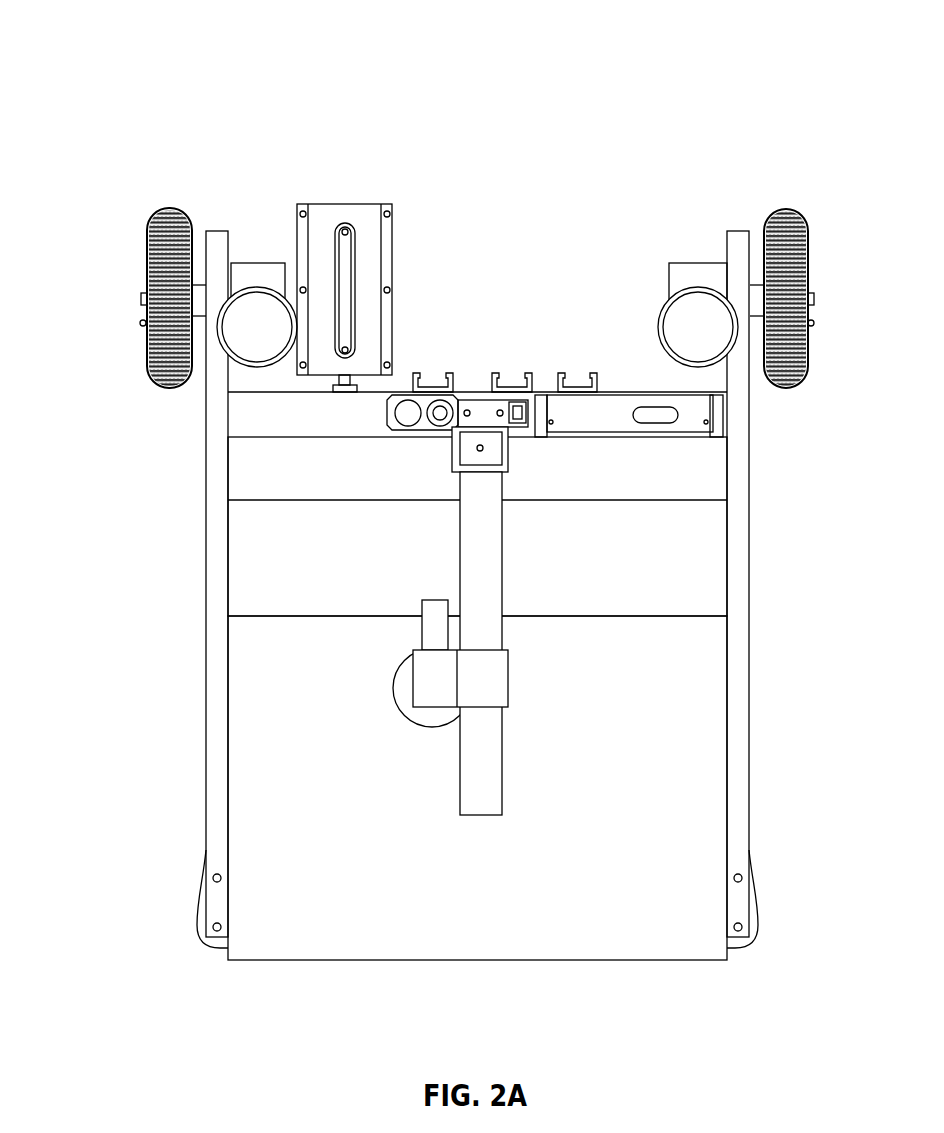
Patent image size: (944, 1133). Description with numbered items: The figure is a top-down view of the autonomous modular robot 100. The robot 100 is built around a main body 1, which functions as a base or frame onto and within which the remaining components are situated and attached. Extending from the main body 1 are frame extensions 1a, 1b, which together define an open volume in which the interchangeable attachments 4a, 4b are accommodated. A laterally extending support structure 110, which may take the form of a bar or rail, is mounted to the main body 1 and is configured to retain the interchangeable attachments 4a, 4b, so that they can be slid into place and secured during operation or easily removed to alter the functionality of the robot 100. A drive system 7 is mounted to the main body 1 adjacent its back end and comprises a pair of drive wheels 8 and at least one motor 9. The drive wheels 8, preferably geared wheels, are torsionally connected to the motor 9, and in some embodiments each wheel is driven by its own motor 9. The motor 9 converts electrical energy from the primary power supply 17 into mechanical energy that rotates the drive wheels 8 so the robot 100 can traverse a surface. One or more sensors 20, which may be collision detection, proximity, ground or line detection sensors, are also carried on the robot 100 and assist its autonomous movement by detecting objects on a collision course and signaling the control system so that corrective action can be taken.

The autonomous modular robot 100 is at (112, 44).
The main body 1 is at (750, 467).
The frame extension 1a is at (750, 733).
The frame extension 1b is at (205, 733).
The interchangeable attachment 4a is at (275, 572).
The interchangeable attachment 4b is at (275, 845).
The drive system 7 is at (600, 310).
The drive wheels 8 is at (166, 210).
The motor 9 is at (254, 263).
The primary power supply 17 is at (324, 204).
The sensors 20 is at (476, 398).
The laterally extending support structure 110 is at (503, 538).